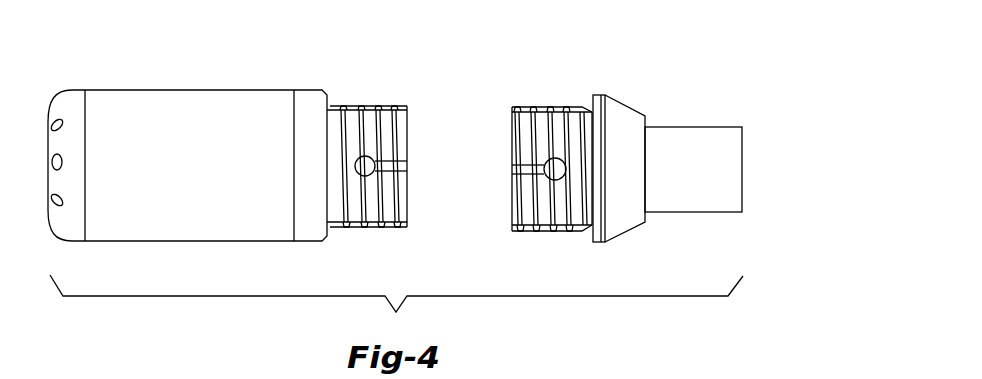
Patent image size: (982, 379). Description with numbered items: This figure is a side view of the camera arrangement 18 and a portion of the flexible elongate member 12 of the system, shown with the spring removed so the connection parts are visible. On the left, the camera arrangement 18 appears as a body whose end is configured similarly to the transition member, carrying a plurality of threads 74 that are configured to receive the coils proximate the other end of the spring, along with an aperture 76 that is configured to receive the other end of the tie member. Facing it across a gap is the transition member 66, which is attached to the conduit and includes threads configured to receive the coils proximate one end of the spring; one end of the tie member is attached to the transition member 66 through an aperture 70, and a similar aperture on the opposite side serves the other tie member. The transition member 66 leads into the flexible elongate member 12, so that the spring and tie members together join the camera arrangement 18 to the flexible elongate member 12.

The camera arrangement 18 is at (144, 86).
The threads 74 is at (367, 104).
The aperture 76 is at (366, 176).
The aperture 70 is at (553, 182).
The transition member 66 is at (621, 90).
The flexible elongate member 12 is at (696, 117).